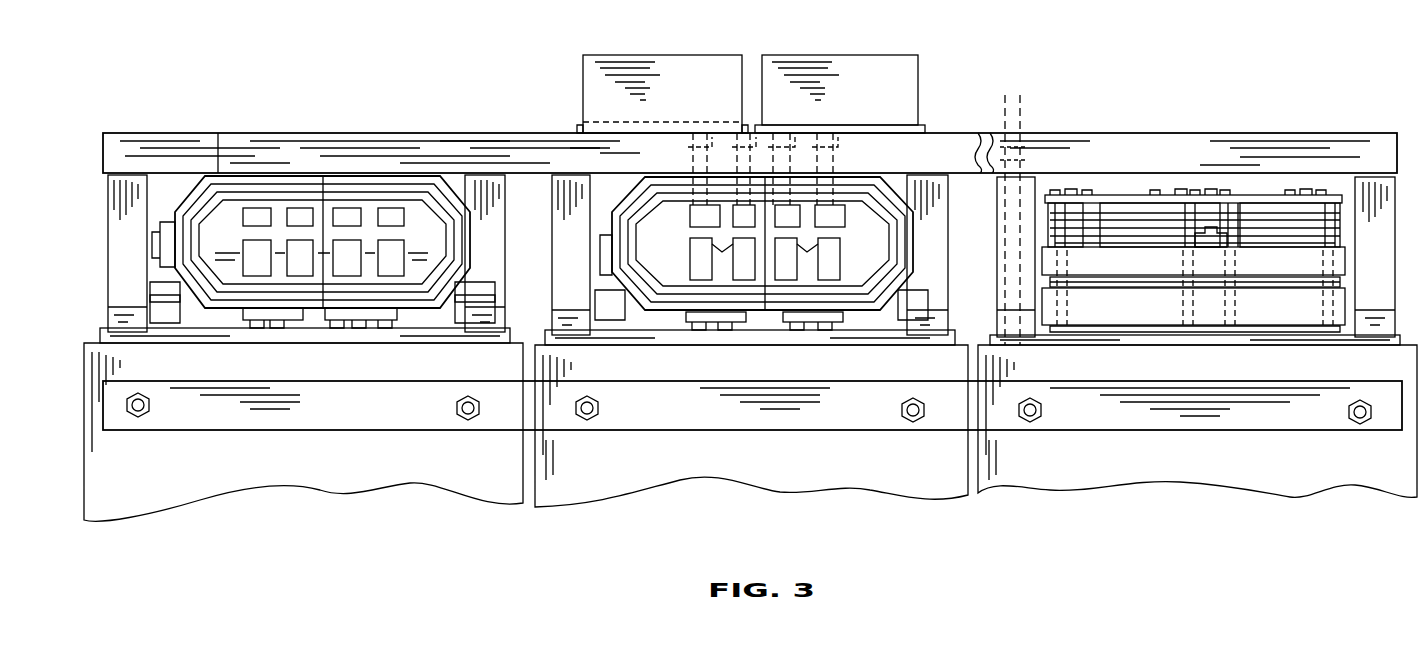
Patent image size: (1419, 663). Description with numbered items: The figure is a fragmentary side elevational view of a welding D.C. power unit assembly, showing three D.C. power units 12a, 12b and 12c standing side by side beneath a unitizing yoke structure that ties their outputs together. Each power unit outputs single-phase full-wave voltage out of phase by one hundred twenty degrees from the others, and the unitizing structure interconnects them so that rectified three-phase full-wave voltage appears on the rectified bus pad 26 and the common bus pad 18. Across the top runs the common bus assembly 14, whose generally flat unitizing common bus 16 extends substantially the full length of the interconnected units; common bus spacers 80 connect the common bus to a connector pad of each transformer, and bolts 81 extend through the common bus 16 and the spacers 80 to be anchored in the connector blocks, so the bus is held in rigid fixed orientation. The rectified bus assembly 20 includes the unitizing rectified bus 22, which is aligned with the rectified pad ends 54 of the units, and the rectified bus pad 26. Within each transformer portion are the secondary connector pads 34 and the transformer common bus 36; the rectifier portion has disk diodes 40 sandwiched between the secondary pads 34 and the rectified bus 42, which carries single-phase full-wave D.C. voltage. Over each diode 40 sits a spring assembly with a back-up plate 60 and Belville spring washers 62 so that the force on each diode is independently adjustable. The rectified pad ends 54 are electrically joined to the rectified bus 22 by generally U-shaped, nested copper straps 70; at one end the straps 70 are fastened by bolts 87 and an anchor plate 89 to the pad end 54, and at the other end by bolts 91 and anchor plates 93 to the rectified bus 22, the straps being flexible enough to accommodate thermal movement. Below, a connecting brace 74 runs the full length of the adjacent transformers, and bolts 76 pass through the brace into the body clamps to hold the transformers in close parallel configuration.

The D.C. power unit 12a is at (407, 490).
The D.C. power unit 12b is at (864, 490).
The D.C. power unit 12c is at (1356, 486).
The common bus assembly 14 is at (963, 133).
The unitizing common bus 16 is at (193, 143).
The common bus pad 18 is at (828, 75).
The rectified bus assembly 20 is at (579, 94).
The unitizing rectified bus 22 is at (452, 143).
The rectified bus pad 26 is at (675, 75).
The secondary connector pad 34 is at (435, 315).
The common bus 36 is at (300, 335).
The disk diode 40 is at (1248, 287).
The rectified bus 42 is at (156, 262).
The rectified pad end 54 is at (272, 260).
The back-up plate 60 is at (1124, 222).
The Belville spring washer 62 is at (1270, 225).
The copper strap 70 is at (250, 170).
The connecting brace 74 is at (306, 413).
The bolt 76 is at (468, 420).
The common bus spacer 80 is at (118, 250).
The bolt 81 is at (1014, 120).
The bolt 87 is at (764, 259).
The anchor plate 89 is at (690, 318).
The bolt 91 is at (683, 140).
The anchor plate 93 is at (717, 207).